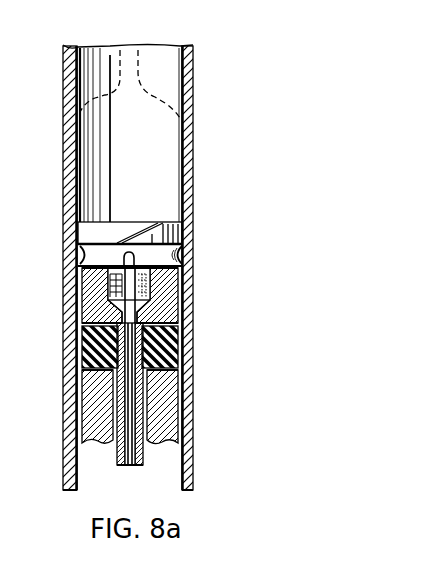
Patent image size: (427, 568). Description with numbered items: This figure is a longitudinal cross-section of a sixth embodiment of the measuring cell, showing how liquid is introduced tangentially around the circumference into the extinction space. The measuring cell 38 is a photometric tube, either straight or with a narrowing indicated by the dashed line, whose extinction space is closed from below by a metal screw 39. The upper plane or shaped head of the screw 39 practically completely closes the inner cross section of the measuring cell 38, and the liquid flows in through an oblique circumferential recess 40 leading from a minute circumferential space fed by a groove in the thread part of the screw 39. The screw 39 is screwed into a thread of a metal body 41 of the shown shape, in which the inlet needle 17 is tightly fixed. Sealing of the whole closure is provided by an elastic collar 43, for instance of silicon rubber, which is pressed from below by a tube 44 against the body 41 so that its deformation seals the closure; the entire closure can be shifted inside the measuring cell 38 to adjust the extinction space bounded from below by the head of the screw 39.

The measuring cell 38 is at (190, 93).
The metal screw 39 is at (67, 212).
The oblique circumferential recess 40 is at (150, 222).
The metal body 41 is at (168, 295).
The collar 43 is at (176, 357).
The tube 44 is at (168, 417).
The inlet needle 17 is at (142, 452).